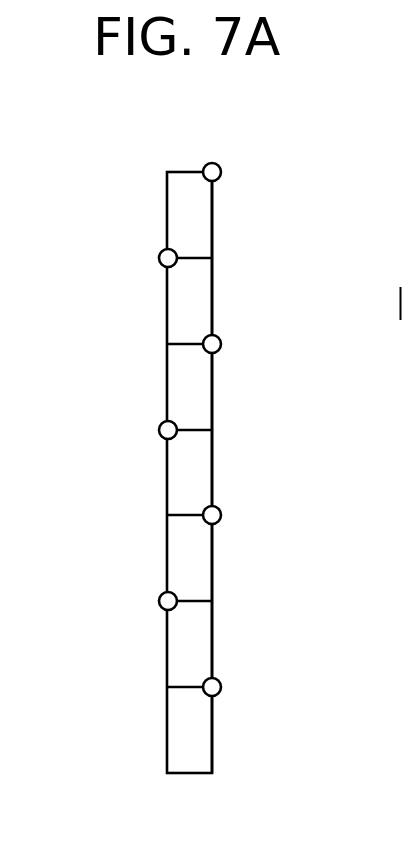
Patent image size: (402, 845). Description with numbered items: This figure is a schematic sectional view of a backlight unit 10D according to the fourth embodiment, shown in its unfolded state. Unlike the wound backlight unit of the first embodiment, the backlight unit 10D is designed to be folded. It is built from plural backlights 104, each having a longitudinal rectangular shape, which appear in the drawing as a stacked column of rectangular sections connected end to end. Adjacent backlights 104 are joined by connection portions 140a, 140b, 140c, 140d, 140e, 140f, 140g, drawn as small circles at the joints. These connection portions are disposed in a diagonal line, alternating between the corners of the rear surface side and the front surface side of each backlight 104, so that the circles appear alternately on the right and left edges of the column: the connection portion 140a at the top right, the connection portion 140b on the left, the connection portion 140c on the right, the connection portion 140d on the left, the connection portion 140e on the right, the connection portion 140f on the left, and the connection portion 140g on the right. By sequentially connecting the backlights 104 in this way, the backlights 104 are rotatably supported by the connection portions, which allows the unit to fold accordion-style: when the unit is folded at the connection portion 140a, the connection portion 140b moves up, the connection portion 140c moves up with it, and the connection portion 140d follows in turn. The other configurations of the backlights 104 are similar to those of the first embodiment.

The backlight unit 10D is at (90, 180).
The backlight 104 is at (212, 209).
The connection portion 140a is at (221, 172).
The connection portion 140b is at (159, 258).
The connection portion 140c is at (221, 344).
The connection portion 140d is at (159, 430).
The connection portion 140e is at (221, 515).
The connection portion 140f is at (159, 601).
The connection portion 140g is at (221, 687).